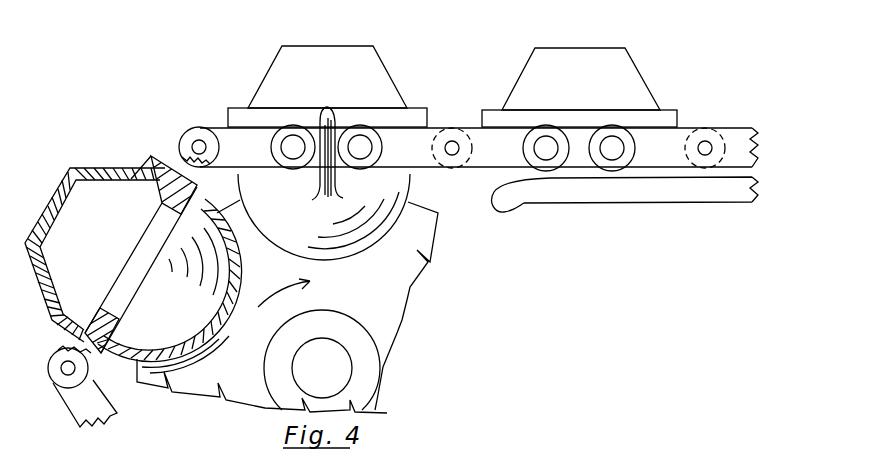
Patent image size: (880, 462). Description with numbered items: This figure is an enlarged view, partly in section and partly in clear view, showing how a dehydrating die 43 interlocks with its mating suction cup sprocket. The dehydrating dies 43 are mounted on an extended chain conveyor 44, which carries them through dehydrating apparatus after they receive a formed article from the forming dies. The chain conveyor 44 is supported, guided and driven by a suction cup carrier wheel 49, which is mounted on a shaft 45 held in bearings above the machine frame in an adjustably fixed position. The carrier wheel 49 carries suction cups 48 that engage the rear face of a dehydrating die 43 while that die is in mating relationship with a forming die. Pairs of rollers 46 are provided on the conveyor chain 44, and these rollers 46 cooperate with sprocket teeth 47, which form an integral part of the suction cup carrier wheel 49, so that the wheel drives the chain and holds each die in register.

The dehydrating die 43 is at (378, 60).
The chain conveyor 44 is at (477, 165).
The shaft 45 is at (347, 367).
The rollers 46 is at (358, 171).
The sprocket teeth 47 is at (335, 196).
The suction cup 48 is at (293, 228).
The suction cup carrier wheel 49 is at (397, 292).